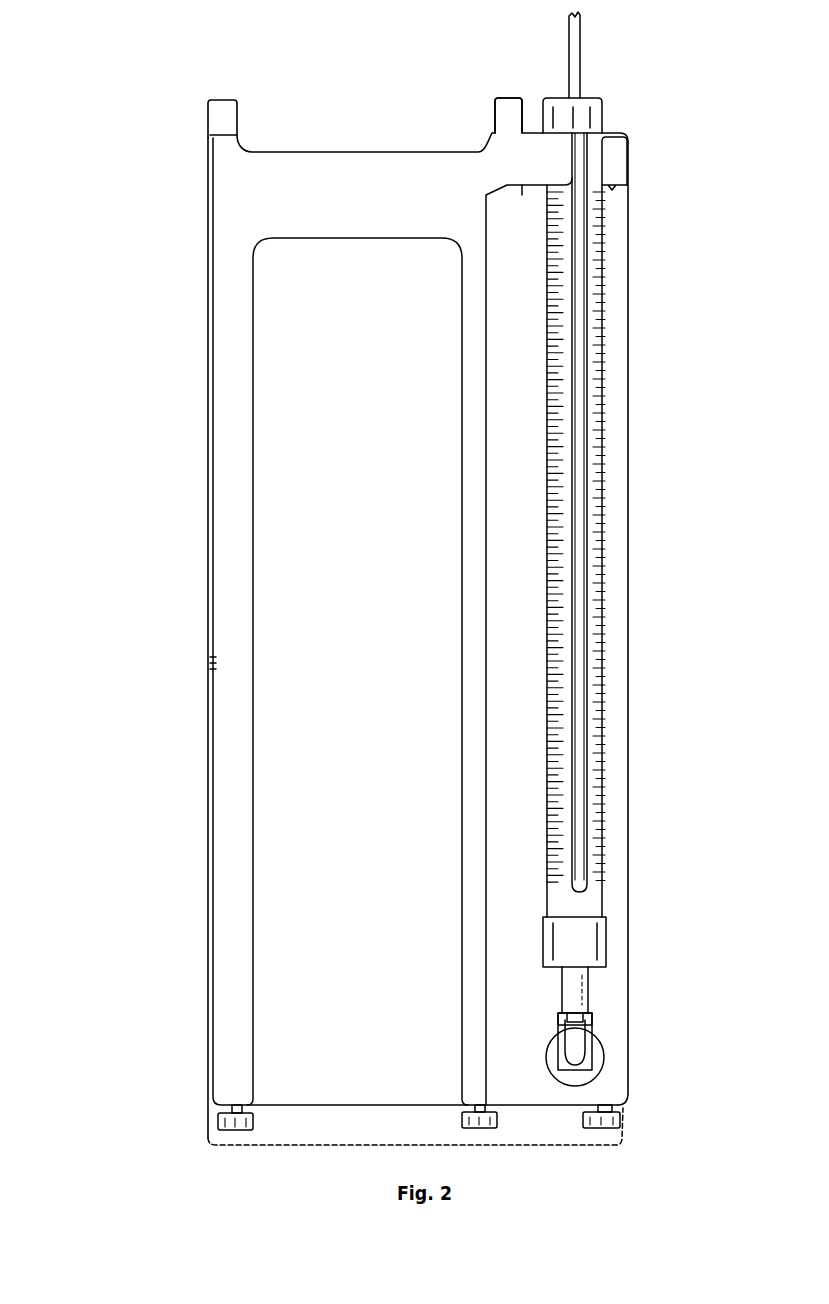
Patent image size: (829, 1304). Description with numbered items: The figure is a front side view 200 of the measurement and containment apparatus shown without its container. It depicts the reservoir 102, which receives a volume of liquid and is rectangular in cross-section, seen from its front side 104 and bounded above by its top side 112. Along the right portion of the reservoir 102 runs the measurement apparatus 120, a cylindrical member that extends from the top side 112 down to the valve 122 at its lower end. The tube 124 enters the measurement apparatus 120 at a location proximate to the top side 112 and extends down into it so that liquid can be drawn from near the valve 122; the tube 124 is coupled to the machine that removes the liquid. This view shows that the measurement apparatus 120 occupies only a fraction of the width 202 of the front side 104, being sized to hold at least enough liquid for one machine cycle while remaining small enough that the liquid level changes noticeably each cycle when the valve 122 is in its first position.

The front side view 200 is at (100, 163).
The reservoir 102 is at (373, 207).
The front side 104 is at (373, 552).
The top side 112 is at (532, 133).
The measurement apparatus 120 is at (618, 872).
The valve 122 is at (575, 1050).
The tube 124 is at (576, 52).
The width 202 is at (325, 1145).